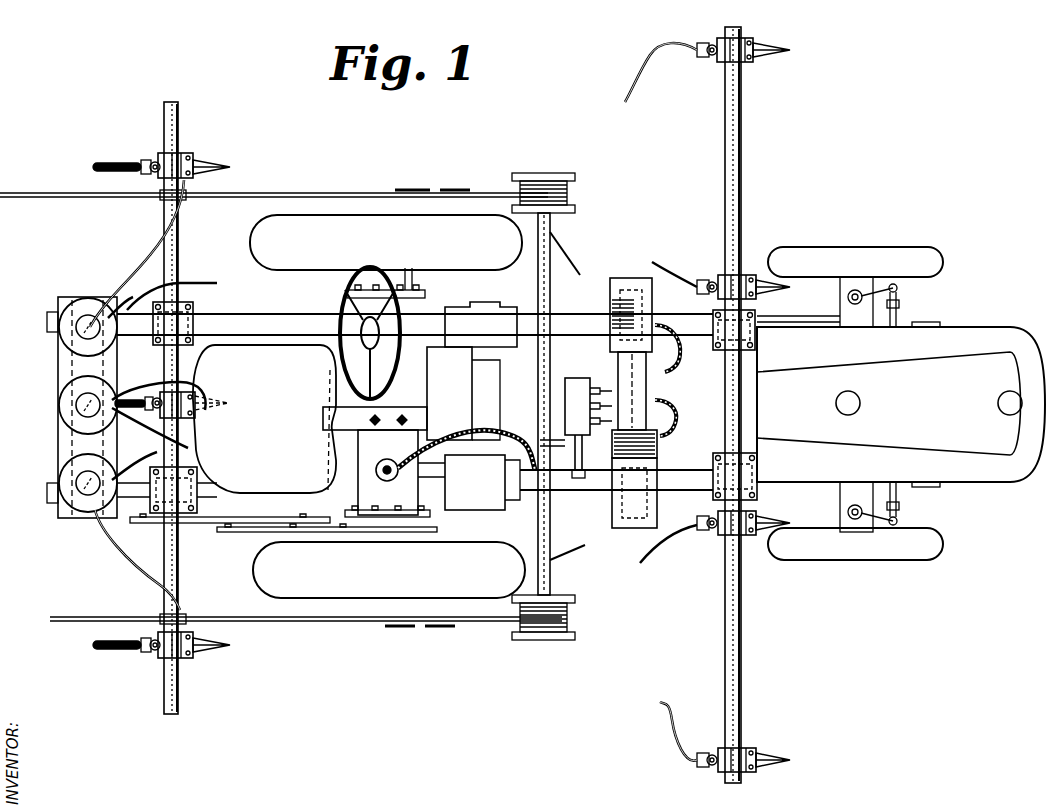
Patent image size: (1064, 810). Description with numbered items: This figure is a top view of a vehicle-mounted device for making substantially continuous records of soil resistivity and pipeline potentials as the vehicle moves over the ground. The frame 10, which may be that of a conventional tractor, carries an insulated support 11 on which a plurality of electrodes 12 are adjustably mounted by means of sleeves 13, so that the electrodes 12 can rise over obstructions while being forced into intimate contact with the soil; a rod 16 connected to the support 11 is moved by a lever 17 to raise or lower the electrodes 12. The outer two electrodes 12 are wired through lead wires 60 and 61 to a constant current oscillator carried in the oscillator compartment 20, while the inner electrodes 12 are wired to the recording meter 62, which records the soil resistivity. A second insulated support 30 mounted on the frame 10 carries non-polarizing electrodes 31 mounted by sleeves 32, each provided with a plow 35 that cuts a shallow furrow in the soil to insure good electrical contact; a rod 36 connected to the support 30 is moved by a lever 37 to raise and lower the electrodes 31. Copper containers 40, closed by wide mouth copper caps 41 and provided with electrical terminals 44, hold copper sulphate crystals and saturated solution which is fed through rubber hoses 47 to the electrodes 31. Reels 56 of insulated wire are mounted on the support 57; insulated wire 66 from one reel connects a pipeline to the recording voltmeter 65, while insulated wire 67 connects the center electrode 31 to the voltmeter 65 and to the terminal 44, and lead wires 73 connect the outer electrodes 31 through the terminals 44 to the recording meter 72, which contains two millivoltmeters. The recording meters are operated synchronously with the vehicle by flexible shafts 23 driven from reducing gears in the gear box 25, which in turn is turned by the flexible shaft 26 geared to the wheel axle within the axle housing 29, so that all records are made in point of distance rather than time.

The frame 10 is at (274, 307).
The insulated support 11 is at (742, 153).
The electrodes 12 is at (762, 48).
The sleeves 13 is at (730, 64).
The rod 16 is at (608, 532).
The lever 17 is at (258, 546).
The oscillator compartment 20 is at (668, 440).
The flexible shafts 23 is at (668, 350).
The gear box 25 is at (576, 386).
The flexible shaft 26 is at (570, 480).
The axle housing 29 is at (372, 456).
The insulated support 30 is at (168, 240).
The non-polarizing electrodes 31 is at (108, 163).
The sleeves 32 is at (176, 163).
The plow 35 is at (206, 164).
The rod 36 is at (198, 525).
The lever 37 is at (275, 516).
The copper containers 40 is at (62, 340).
The copper caps 41 is at (78, 302).
The electrical terminals 44 is at (126, 308).
The rubber hoses 47 is at (128, 258).
The reels 56 is at (560, 175).
The support 57 is at (550, 292).
The lead wire 60 is at (648, 72).
The lead wire 61 is at (681, 720).
The recording meter 62 is at (627, 278).
The recording voltmeter 65 is at (646, 530).
The insulated wire 66 is at (368, 192).
The insulated wire 67 is at (190, 450).
The recording meter 72 is at (617, 390).
The lead wires 73 is at (199, 283).